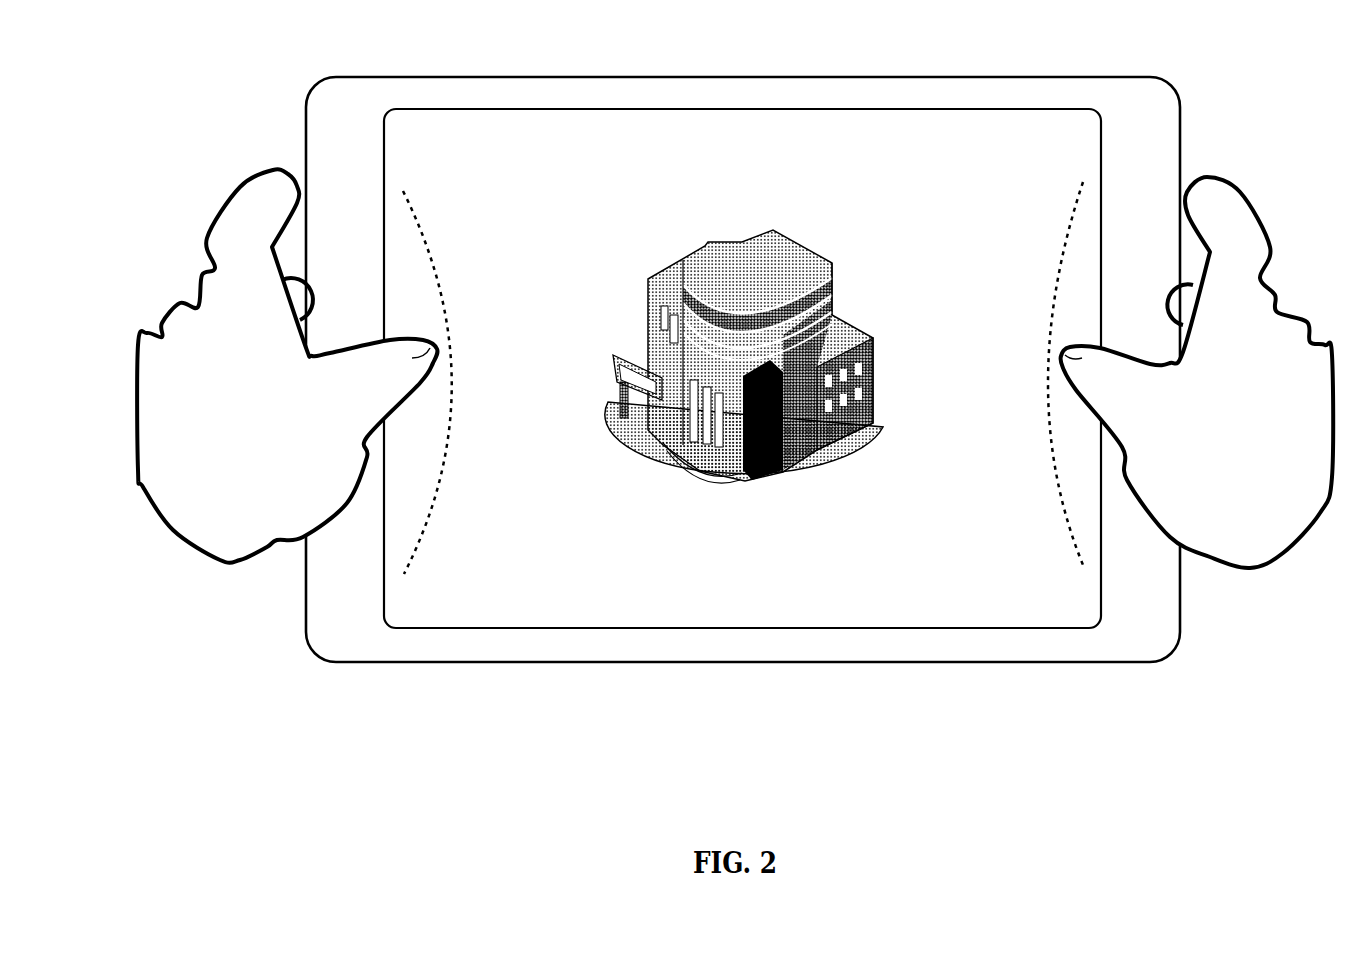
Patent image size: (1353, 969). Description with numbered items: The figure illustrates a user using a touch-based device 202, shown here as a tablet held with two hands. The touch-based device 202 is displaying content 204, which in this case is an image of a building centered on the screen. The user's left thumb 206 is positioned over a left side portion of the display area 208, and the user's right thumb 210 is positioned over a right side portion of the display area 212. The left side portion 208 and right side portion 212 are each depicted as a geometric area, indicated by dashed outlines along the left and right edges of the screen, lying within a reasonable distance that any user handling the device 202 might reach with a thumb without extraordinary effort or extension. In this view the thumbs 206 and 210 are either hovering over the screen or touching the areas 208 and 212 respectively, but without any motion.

The touch-based device 202 is at (1089, 77).
The content 204 is at (803, 234).
The left thumb 206 is at (437, 346).
The left side portion of the display area 208 is at (437, 233).
The right thumb 210 is at (1061, 346).
The right side portion of the display area 212 is at (1082, 218).